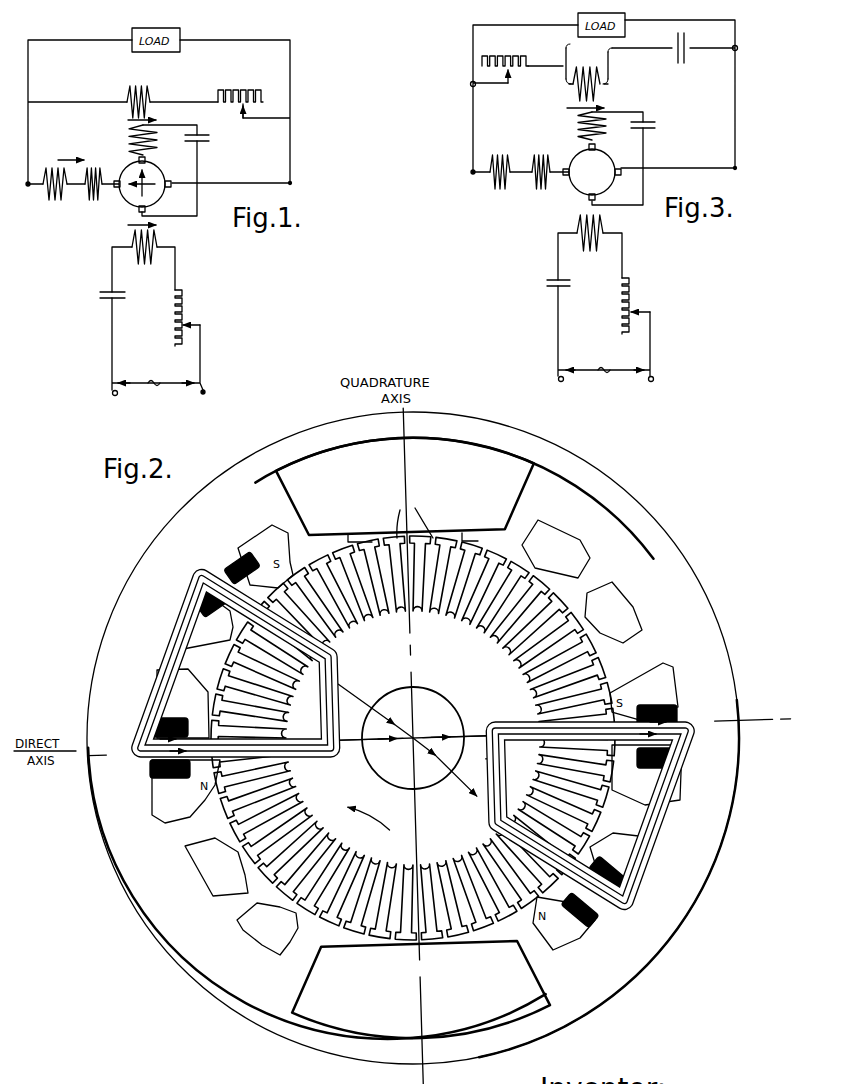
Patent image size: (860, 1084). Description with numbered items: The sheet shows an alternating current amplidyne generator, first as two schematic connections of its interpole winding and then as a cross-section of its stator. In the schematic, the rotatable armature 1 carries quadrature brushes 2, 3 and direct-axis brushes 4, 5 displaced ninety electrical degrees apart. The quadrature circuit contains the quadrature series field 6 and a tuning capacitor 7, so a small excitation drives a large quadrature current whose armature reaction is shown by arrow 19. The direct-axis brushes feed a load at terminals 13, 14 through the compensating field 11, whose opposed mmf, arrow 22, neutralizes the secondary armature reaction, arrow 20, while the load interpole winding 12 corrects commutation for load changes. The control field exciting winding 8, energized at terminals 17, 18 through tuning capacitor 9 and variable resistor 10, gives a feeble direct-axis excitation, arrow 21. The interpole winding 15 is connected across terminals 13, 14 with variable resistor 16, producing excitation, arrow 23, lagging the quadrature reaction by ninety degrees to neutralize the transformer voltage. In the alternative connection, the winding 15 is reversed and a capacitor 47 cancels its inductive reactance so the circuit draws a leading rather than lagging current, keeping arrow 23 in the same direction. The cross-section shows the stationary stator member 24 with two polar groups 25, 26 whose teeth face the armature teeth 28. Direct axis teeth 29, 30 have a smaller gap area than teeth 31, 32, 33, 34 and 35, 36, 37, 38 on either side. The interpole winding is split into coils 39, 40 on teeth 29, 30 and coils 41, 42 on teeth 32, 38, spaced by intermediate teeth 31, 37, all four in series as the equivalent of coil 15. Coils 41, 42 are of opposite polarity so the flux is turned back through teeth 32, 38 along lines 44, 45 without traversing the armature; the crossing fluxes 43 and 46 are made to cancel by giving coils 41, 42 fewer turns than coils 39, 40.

In FIG. 1, the rotatable armature 1 is at (159, 150).
In FIG. 3, the rotatable armature 1 is at (608, 140).
In FIG. 1, the quadrature brush 2 is at (138, 160).
In FIG. 3, the quadrature brush 2 is at (588, 146).
In FIG. 1, the quadrature brush 3 is at (147, 209).
In FIG. 3, the quadrature brush 3 is at (597, 197).
In FIG. 1, the direct-axis brush 4 is at (116, 189).
In FIG. 3, the direct-axis brush 4 is at (562, 183).
In FIG. 1, the direct-axis brush 5 is at (171, 184).
In FIG. 3, the direct-axis brush 5 is at (621, 171).
In FIG. 1, the quadrature series field 6 is at (133, 128).
In FIG. 3, the quadrature series field 6 is at (577, 125).
In FIG. 1, the tuning capacitor 7 is at (204, 139).
In FIG. 3, the tuning capacitor 7 is at (652, 125).
In FIG. 1, the control field exciting winding 8 is at (144, 255).
In FIG. 3, the control field exciting winding 8 is at (590, 242).
In FIG. 1, the tuning capacitor 9 is at (106, 295).
In FIG. 3, the tuning capacitor 9 is at (551, 285).
In FIG. 1, the variable resistor 10 is at (190, 305).
In FIG. 3, the variable resistor 10 is at (632, 302).
In FIG. 1, the compensating field 11 is at (52, 203).
In FIG. 3, the compensating field 11 is at (502, 192).
In FIG. 1, the load interpole winding 12 is at (88, 202).
In FIG. 3, the load interpole winding 12 is at (544, 192).
In FIG. 1, the load terminal 13 is at (20, 187).
In FIG. 3, the load terminal 13 is at (471, 173).
In FIG. 1, the load terminal 14 is at (299, 182).
In FIG. 3, the load terminal 14 is at (745, 172).
In FIG. 1, the interpole winding 15 is at (143, 87).
In FIG. 3, the interpole winding 15 is at (564, 79).
In FIG. 1, the variable resistor 16 is at (246, 90).
In FIG. 3, the variable resistor 16 is at (512, 62).
In FIG. 1, the terminal 17 is at (111, 401).
In FIG. 3, the terminal 17 is at (571, 388).
In FIG. 1, the terminal 18 is at (205, 400).
In FIG. 3, the terminal 18 is at (660, 387).
In FIG. 1, the quadrature armature reaction arrow 19 is at (150, 183).
In FIG. 1, the direct axis armature reaction arrow 20 is at (141, 192).
In FIG. 1, the control field excitation arrow 21 is at (152, 233).
In FIG. 1, the compensating mmf arrow 22 is at (71, 150).
In FIG. 1, the interpole excitation arrow 23 is at (151, 112).
In FIG. 3, the interpole excitation arrow 23 is at (597, 99).
In FIG. 2, the stationary stator member 24 is at (412, 737).
In FIG. 2, the polar group 25 is at (398, 738).
In FIG. 2, the polar group 26 is at (120, 772).
In FIG. 2, the armature teeth 28 is at (413, 517).
In FIG. 2, the direct axis stator tooth 29 is at (196, 720).
In FIG. 2, the direct axis stator tooth 30 is at (640, 769).
In FIG. 2, the stator tooth 31 is at (192, 665).
In FIG. 2, the stator tooth 32 is at (258, 556).
In FIG. 2, the stator tooth 33 is at (216, 858).
In FIG. 2, the stator tooth 34 is at (263, 924).
In FIG. 2, the stator tooth 35 is at (613, 626).
In FIG. 2, the stator tooth 36 is at (557, 560).
In FIG. 2, the stator tooth 37 is at (617, 815).
In FIG. 2, the stator tooth 38 is at (566, 921).
In FIG. 2, the interpole coil 39 is at (162, 778).
In FIG. 2, the interpole coil 40 is at (652, 704).
In FIG. 2, the interpole coil 41 is at (205, 617).
In FIG. 2, the interpole coil 42 is at (611, 866).
In FIG. 2, the traversing flux line 43 is at (414, 729).
In FIG. 2, the flux line 44 is at (371, 711).
In FIG. 2, the flux line 45 is at (478, 763).
In FIG. 2, the flux line 46 is at (445, 771).
In FIG. 3, the capacitor 47 is at (680, 37).